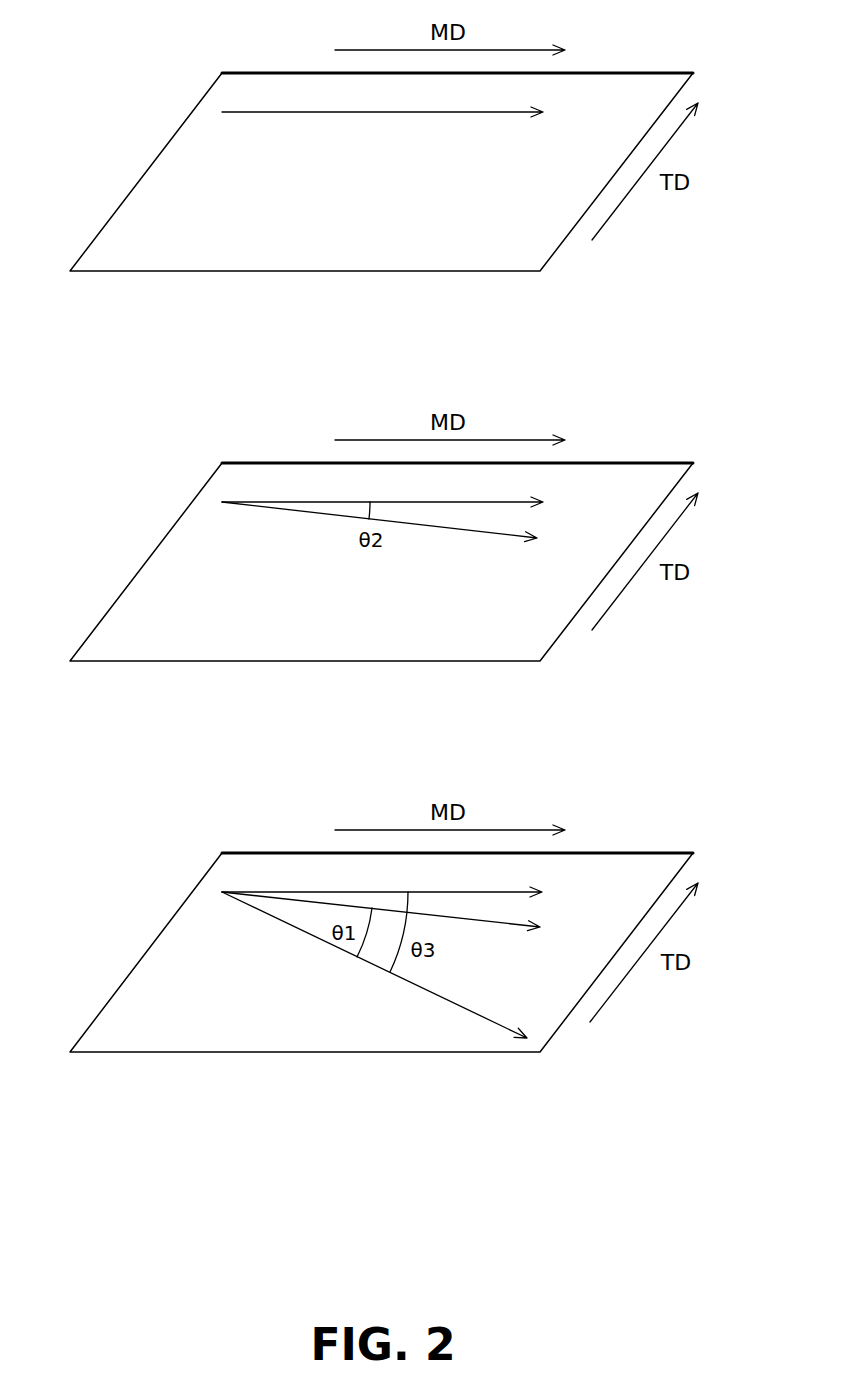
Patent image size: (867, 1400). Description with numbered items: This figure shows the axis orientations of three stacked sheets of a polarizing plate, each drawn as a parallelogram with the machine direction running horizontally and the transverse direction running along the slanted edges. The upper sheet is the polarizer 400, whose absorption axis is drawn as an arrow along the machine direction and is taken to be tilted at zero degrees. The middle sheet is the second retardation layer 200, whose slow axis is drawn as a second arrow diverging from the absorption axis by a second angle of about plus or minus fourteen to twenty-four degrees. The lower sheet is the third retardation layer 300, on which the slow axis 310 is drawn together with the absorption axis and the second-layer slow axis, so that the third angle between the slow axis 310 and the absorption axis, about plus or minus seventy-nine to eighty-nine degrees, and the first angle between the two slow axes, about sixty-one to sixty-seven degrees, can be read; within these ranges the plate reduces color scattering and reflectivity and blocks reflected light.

The polarizer 400 is at (623, 72).
The second retardation layer 200 is at (623, 462).
The third retardation layer 300 is at (623, 852).
The slow axis of the third retardation layer 310 is at (332, 945).